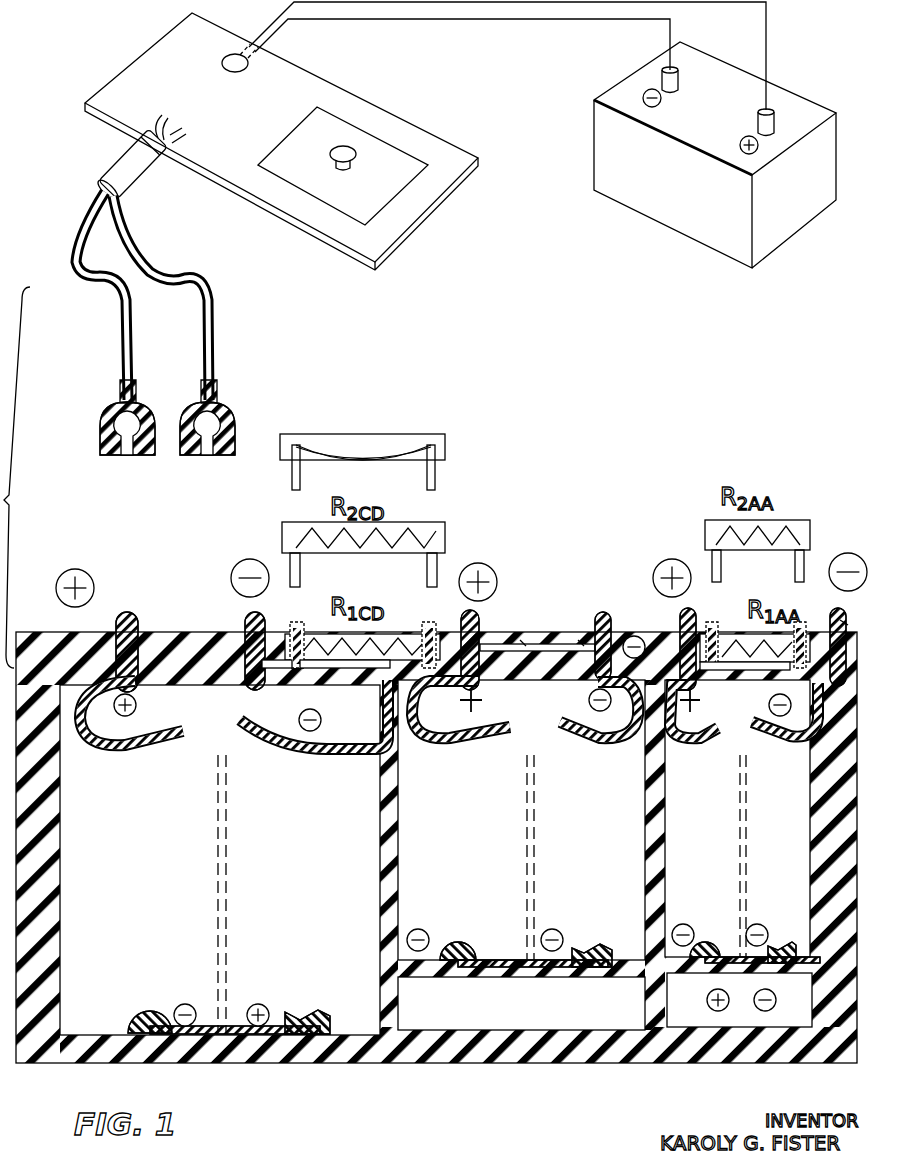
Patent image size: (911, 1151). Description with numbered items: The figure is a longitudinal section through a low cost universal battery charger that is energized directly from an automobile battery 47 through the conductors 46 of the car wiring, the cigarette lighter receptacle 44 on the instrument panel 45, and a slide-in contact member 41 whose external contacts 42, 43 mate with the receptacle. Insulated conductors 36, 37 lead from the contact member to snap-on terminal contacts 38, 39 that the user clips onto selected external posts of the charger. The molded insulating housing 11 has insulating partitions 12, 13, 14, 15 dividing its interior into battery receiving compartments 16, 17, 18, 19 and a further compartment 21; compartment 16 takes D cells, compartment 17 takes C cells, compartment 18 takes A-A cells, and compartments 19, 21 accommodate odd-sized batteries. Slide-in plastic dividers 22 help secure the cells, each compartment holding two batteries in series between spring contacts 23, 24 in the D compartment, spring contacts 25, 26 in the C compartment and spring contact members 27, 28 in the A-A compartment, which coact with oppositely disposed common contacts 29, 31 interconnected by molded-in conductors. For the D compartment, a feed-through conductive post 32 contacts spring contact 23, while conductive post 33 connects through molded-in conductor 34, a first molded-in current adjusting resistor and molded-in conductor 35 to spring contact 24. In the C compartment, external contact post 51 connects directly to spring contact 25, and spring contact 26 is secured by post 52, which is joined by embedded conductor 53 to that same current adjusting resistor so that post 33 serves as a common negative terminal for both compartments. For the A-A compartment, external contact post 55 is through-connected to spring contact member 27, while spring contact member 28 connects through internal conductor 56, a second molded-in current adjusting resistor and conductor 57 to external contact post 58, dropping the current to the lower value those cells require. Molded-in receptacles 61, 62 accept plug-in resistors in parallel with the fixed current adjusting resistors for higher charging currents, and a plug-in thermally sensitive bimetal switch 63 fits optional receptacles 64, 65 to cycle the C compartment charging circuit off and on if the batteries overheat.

The housing 11 is at (165, 635).
The insulating partition 12 is at (398, 862).
The insulating partition 13 is at (665, 866).
The insulating partition 14 is at (510, 970).
The insulating partition 15 is at (795, 972).
The battery receiving compartment 16 is at (220, 860).
The battery receiving compartment 17 is at (521, 820).
The battery receiving compartment 18 is at (737, 818).
The battery receiving compartment 19 is at (739, 1000).
The compartment 21 is at (521, 1003).
The slide-in plastic divider 22 is at (226, 832).
The spring contact 23 is at (150, 742).
The spring contact 24 is at (318, 752).
The spring contact 25 is at (472, 745).
The spring contact 26 is at (598, 742).
The spring contact member 27 is at (700, 748).
The spring contact member 28 is at (795, 748).
The common contact 29 is at (145, 1012).
The common contact 31 is at (303, 1012).
The feed-through conductive post 32 is at (125, 612).
The conductive post 33 is at (247, 618).
The molded-in electrical conductor 34 is at (262, 668).
The molded-in conductor 35 is at (370, 670).
The insulated conductor 36 is at (122, 340).
The insulated conductor 37 is at (215, 338).
The snap-on terminal contact 38 is at (100, 420).
The snap-on terminal contact 39 is at (225, 410).
The slide-in contact member 41 is at (138, 183).
The external contact 42 is at (140, 130).
The external contact 43 is at (180, 130).
The cigarette lighter receptacle 44 is at (248, 62).
The instrument panel 45 is at (293, 141).
The conductors 46 is at (530, 20).
The automobile battery 47 is at (680, 225).
The external contact post 51 is at (478, 620).
The post 52 is at (603, 620).
The embedded conductor 53 is at (545, 648).
The external contact post 55 is at (680, 620).
The internal conductor 56 is at (758, 672).
The conductor 57 is at (833, 618).
The external contact post 58 is at (848, 622).
The receptacle 61 is at (292, 628).
The receptacle 62 is at (712, 628).
The bimetal switch 63 is at (447, 448).
The optional receptacle 64 is at (522, 640).
The optional receptacle 65 is at (580, 640).